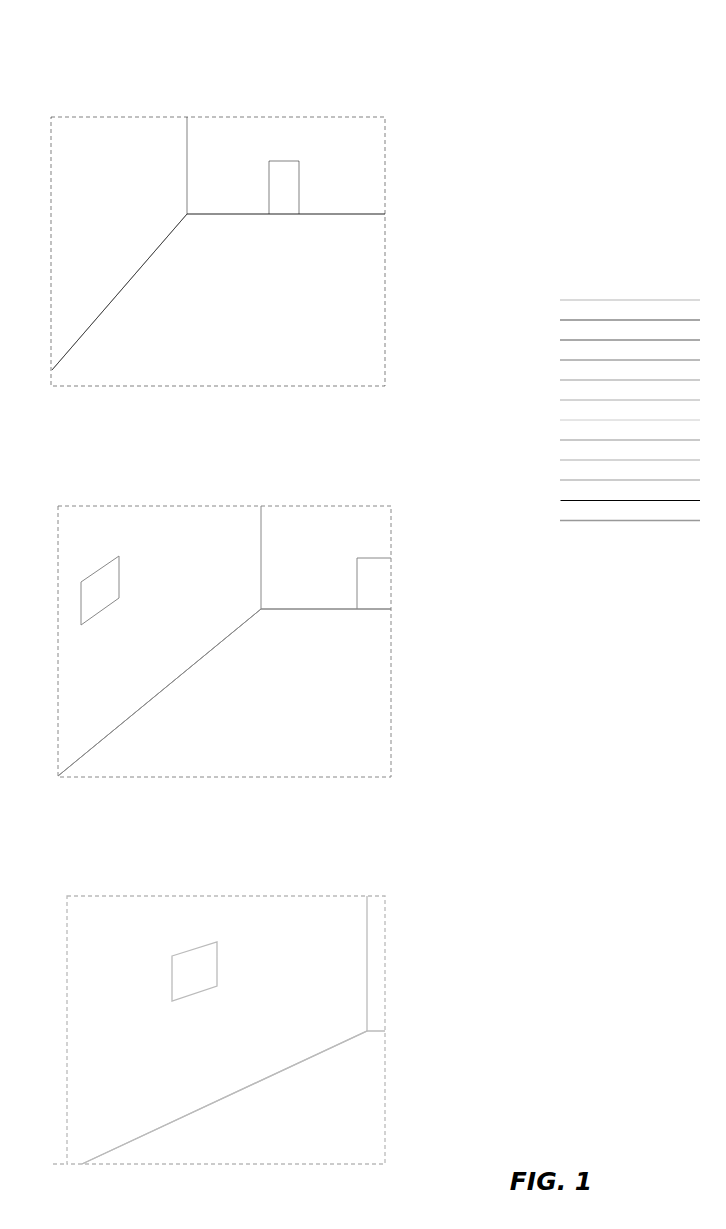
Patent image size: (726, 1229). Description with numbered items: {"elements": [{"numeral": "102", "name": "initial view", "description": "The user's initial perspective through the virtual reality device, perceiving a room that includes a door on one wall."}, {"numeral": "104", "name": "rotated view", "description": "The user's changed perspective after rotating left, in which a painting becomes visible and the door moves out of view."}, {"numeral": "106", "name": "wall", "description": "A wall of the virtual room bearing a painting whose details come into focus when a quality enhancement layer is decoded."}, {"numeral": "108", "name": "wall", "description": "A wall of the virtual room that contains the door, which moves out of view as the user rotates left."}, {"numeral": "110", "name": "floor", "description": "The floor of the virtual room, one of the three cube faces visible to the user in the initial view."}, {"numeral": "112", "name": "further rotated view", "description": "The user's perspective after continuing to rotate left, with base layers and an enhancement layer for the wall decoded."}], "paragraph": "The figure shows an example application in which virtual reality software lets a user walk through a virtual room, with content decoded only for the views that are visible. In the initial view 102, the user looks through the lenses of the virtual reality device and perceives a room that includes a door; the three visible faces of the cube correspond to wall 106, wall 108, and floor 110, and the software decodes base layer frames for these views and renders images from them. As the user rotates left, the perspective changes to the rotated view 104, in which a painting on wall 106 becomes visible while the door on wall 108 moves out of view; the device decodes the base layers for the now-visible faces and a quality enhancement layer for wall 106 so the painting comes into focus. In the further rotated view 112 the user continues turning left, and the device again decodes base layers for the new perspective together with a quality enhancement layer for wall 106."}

The first image 102 is at (385, 173).
The second image 104 is at (391, 547).
The wall 106 is at (119, 139).
The back wall 108 is at (269, 138).
The floor 110 is at (366, 280).
The third image 112 is at (385, 943).